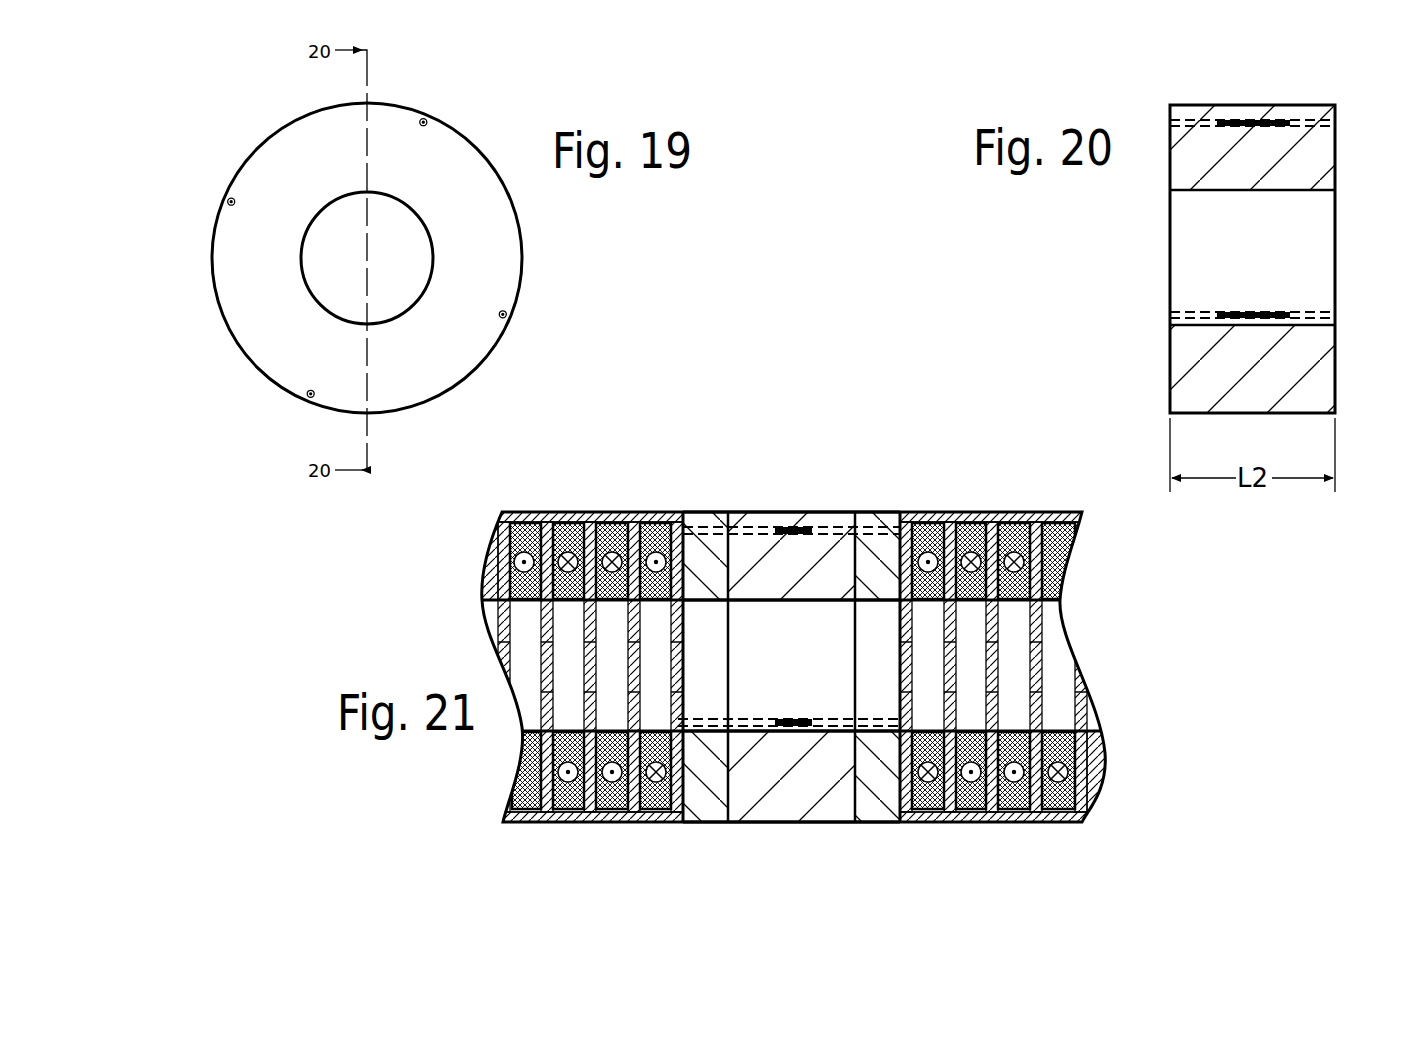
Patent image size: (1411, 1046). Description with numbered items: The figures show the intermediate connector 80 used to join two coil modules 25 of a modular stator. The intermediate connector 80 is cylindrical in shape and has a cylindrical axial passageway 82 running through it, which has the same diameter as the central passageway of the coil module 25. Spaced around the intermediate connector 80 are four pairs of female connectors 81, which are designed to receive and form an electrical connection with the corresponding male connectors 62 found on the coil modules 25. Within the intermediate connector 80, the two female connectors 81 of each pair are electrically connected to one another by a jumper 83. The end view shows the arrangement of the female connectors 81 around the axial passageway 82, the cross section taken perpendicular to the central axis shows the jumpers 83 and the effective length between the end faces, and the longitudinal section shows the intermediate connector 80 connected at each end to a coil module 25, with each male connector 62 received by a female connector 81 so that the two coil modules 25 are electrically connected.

In FIG. 21, the coil module 25 is at (592, 832).
In FIG. 21, the male connector 62 is at (705, 737).
In FIG. 19, the intermediate connector 80 is at (481, 382).
In FIG. 21, the intermediate connector 80 is at (789, 661).
In FIG. 19, the female connector 81 is at (427, 119).
In FIG. 20, the female connector 81 is at (1335, 123).
In FIG. 21, the female connector 81 is at (765, 735).
In FIG. 19, the cylindrical axial passageway 82 is at (401, 257).
In FIG. 20, the cylindrical axial passageway 82 is at (1274, 260).
In FIG. 20, the jumper 83 is at (1262, 120).
In FIG. 21, the jumper 83 is at (790, 735).